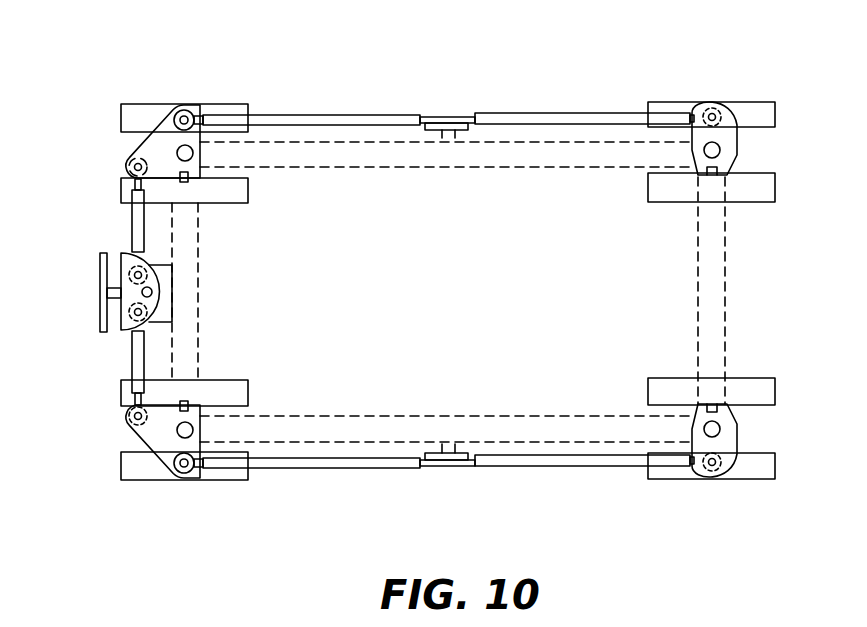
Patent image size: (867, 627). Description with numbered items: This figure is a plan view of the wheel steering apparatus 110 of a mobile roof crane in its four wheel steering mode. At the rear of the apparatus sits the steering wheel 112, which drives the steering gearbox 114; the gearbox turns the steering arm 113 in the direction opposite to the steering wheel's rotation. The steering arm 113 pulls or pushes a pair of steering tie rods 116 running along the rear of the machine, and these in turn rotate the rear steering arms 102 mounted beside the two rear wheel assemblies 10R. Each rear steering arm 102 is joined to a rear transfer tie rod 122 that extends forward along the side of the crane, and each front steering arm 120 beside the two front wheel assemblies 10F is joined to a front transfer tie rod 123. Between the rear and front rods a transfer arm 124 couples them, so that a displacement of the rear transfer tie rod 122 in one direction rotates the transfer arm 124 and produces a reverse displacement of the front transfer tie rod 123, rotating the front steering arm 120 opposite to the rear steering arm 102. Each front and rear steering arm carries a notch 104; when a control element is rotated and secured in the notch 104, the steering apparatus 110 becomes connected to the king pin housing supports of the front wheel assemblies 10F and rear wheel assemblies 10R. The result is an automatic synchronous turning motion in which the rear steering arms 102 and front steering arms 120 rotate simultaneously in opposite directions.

The wheel steering apparatus 110 is at (398, 105).
The rear wheel assembly 10R is at (92, 148).
The front wheel assembly 10F is at (797, 143).
The rear steering arm 102 is at (202, 165).
The front steering arm 120 is at (692, 153).
The notch 104 is at (186, 183).
The steering wheel 112 is at (100, 277).
The steering arm 113 is at (155, 283).
The steering gearbox 114 is at (167, 298).
The steering tie rod 116 is at (133, 225).
The rear transfer tie rod 122 is at (335, 119).
The front transfer tie rod 123 is at (503, 118).
The transfer arm 124 is at (452, 126).